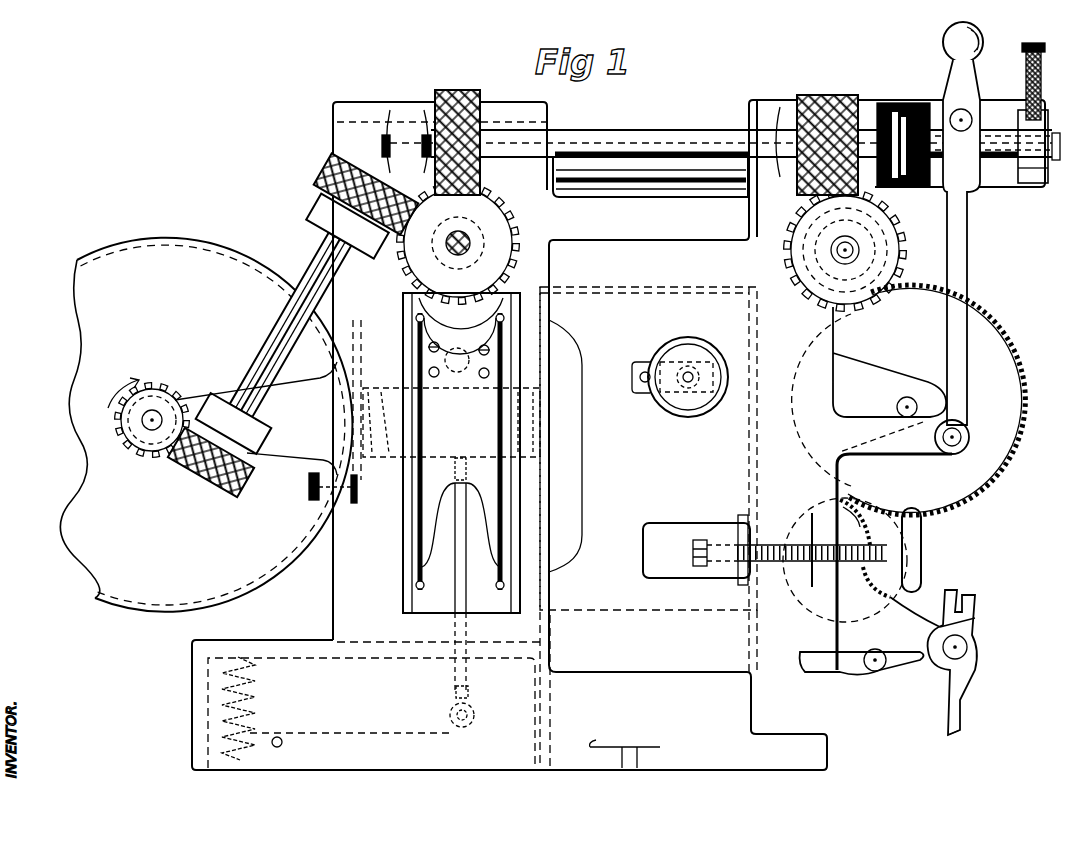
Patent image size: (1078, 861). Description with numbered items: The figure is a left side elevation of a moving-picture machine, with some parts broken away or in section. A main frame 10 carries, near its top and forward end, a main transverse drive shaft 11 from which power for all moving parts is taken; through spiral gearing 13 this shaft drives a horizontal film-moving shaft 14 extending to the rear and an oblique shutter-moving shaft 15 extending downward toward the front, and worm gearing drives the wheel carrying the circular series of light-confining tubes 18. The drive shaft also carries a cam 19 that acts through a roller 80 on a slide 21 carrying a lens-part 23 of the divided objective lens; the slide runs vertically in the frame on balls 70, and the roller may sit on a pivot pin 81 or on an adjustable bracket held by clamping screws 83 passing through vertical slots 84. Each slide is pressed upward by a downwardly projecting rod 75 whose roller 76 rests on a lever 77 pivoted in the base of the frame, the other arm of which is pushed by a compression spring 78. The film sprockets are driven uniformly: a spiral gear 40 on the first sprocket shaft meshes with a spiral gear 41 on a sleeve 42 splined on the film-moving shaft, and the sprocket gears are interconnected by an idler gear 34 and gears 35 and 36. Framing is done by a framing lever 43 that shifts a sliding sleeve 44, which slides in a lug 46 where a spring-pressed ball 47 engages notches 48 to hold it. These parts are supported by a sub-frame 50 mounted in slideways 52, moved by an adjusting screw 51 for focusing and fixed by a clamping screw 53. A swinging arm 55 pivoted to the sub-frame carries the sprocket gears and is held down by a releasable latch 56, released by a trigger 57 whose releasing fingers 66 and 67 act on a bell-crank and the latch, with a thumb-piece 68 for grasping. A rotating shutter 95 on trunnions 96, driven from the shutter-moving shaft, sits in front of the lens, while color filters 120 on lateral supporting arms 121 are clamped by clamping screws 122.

The main frame 10 is at (355, 562).
The main transverse drive shaft 11 is at (452, 233).
The spiral gearing 13 is at (460, 92).
The film-moving shaft 14 is at (651, 130).
The shutter-moving shaft 15 is at (308, 268).
The light-confining tubes 18 is at (706, 128).
The cam 19 is at (440, 313).
The slide 21 is at (487, 478).
The lens-part 23 is at (530, 422).
The idler gear 34 is at (997, 454).
The gear 35 is at (860, 524).
The gear 36 is at (876, 594).
The spiral gear 40 is at (880, 230).
The spiral gear 41 is at (830, 96).
The sleeve 42 is at (871, 128).
The framing lever 43 is at (974, 37).
The sliding sleeve 44 is at (993, 150).
The lug 46 is at (1048, 175).
The spring-pressed ball 47 is at (1045, 112).
The notches 48 is at (997, 130).
The sub-frame 50 is at (650, 265).
The adjusting screw 51 is at (930, 548).
The slideways 52 is at (707, 286).
The clamping screw 53 is at (685, 362).
The swinging arm 55 is at (883, 383).
The releasable latch 56 is at (838, 674).
The trigger 57 is at (928, 711).
The releasing finger 66 is at (950, 620).
The releasing finger 67 is at (767, 397).
The thumb-piece 68 is at (962, 710).
The balls 70 is at (505, 566).
The rod 75 is at (460, 594).
The roller 76 is at (472, 715).
The lever 77 is at (383, 738).
The compression spring 78 is at (256, 690).
The roller 80 is at (430, 345).
The pivot pin 81 is at (430, 352).
The clamping screws 83 is at (438, 370).
The vertical slots 84 is at (489, 380).
The rotating shutter 95 is at (183, 263).
The trunnions 96 is at (157, 415).
The color filters 120 is at (358, 347).
The supporting arms 121 is at (357, 500).
The clamping screws 122 is at (308, 488).